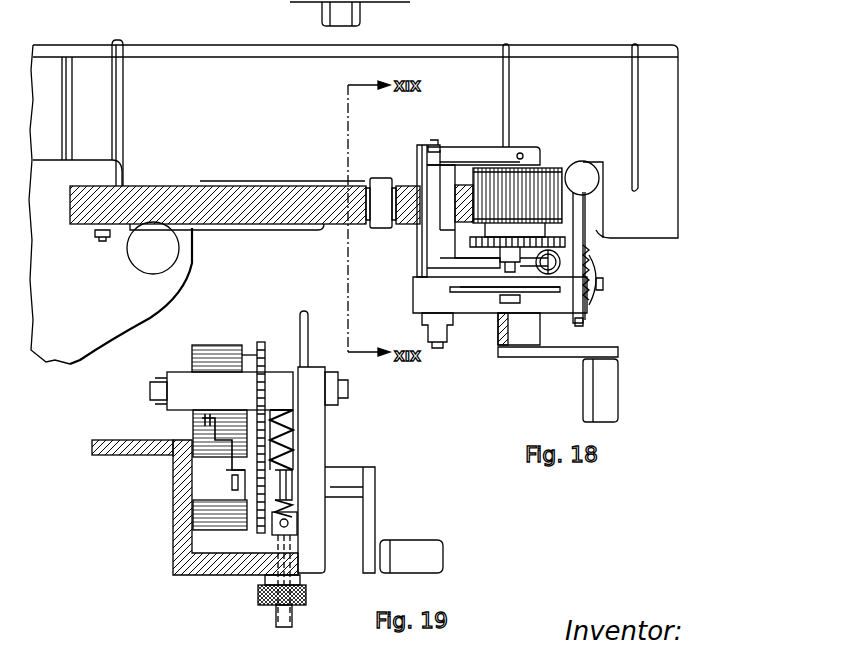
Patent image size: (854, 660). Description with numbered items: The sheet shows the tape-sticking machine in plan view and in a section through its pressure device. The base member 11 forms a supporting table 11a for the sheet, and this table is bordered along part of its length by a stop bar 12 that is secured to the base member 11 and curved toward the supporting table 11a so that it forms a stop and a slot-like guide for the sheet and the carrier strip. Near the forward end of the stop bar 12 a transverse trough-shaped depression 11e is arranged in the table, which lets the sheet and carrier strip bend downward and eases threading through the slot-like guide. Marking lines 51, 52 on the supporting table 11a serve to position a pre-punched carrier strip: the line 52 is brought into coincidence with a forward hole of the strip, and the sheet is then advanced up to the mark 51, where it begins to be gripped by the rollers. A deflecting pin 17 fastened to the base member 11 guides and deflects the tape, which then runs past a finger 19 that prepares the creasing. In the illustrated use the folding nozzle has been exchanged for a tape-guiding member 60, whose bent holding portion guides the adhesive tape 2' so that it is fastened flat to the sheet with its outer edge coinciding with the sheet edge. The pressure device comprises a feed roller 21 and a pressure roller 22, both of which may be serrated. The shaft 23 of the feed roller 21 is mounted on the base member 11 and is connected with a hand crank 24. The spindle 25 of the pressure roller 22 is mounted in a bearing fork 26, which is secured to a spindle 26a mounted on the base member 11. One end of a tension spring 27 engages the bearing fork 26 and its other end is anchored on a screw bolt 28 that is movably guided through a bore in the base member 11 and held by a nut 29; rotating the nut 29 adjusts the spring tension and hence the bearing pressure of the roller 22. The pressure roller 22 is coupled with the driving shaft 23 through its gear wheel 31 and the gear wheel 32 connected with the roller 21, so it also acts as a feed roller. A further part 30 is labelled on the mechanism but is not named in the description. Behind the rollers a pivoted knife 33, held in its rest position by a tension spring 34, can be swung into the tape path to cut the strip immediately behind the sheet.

In FIG. 18, the trough-shaped depression 11e is at (112, 48).
In FIG. 18, the marking line 51 is at (508, 78).
In FIG. 18, the marking line 52 is at (634, 68).
In FIG. 18, the bearing fork 26 is at (472, 160).
In FIG. 19, the bearing fork 26 is at (182, 380).
In FIG. 18, the stop bar 12 is at (62, 222).
In FIG. 18, the deflecting pin 17 is at (172, 243).
In FIG. 18, the adhesive tape 2' is at (245, 224).
In FIG. 18, the finger 19 is at (275, 232).
In FIG. 18, the tape-guiding member 60 is at (388, 215).
In FIG. 19, the tape-guiding member 60 is at (205, 418).
In FIG. 18, the pivoted blade or knife 33 is at (585, 240).
In FIG. 18, the tension spring 34 is at (590, 268).
In FIG. 18, the tension spring 27 is at (568, 292).
In FIG. 19, the tension spring 27 is at (287, 437).
In FIG. 18, the shaft 30 is at (482, 292).
In FIG. 19, the shaft 30 is at (300, 318).
In FIG. 18, the spindle 26a is at (440, 345).
In FIG. 19, the spindle 26a is at (350, 390).
In FIG. 18, the spindle 25 is at (520, 318).
In FIG. 18, the shaft 23 is at (530, 345).
In FIG. 19, the shaft 23 is at (366, 480).
In FIG. 18, the hand crank 24 is at (597, 396).
In FIG. 19, the hand crank 24 is at (402, 546).
In FIG. 19, the pressure roller 22 is at (212, 345).
In FIG. 19, the gear wheel 31 is at (260, 342).
In FIG. 19, the supporting table 11a is at (110, 440).
In FIG. 19, the base member 11 is at (185, 537).
In FIG. 19, the feed roller 21 is at (205, 512).
In FIG. 19, the gear wheel 32 is at (264, 545).
In FIG. 19, the nut 29 is at (306, 598).
In FIG. 19, the screw bolt 28 is at (277, 614).